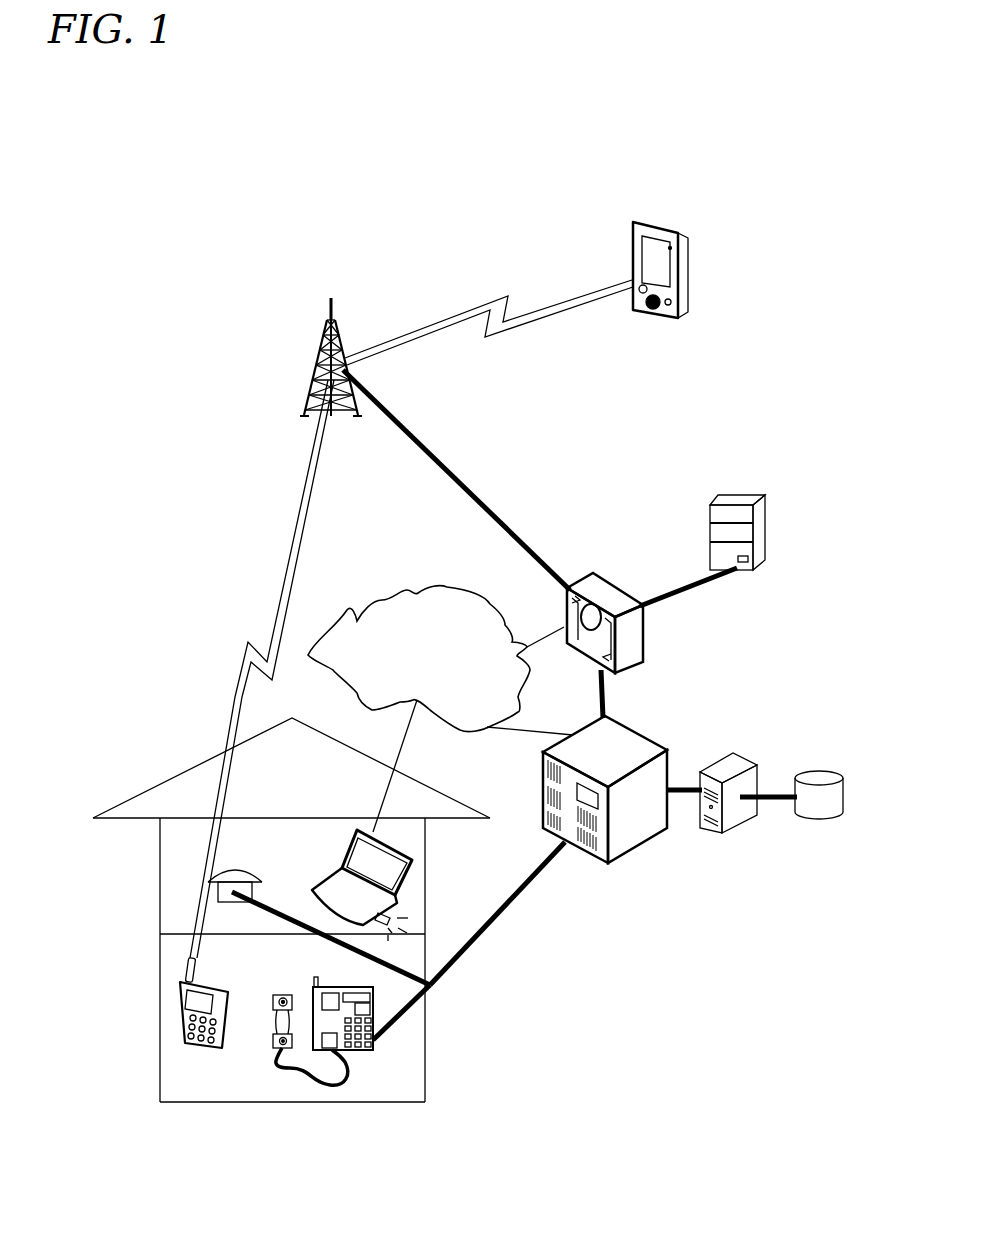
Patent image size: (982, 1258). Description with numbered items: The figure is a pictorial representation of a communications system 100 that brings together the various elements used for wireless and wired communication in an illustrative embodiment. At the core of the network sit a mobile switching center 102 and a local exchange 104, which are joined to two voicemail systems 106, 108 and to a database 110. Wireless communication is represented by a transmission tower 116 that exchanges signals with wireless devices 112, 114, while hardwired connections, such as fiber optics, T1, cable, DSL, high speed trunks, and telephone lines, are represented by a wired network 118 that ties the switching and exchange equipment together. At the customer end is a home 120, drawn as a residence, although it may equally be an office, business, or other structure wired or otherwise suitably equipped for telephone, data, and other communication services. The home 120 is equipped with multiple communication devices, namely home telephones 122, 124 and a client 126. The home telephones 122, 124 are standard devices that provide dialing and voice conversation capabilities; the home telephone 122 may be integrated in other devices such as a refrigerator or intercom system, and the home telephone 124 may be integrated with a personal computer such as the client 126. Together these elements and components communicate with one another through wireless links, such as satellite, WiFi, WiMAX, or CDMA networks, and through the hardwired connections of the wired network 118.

The communications system 100 is at (156, 221).
The mobile switching center 102 is at (593, 572).
The local exchange 104 is at (610, 865).
The voicemail system 106 is at (743, 523).
The voicemail system 108 is at (745, 817).
The database 110 is at (800, 776).
The wireless device 112 is at (692, 238).
The wireless device 114 is at (183, 1040).
The transmission tower 116 is at (313, 393).
The wired network 118 is at (404, 682).
The home 120 is at (153, 768).
The home telephone 122 is at (237, 893).
The home telephone 124 is at (363, 1052).
The client 126 is at (413, 893).